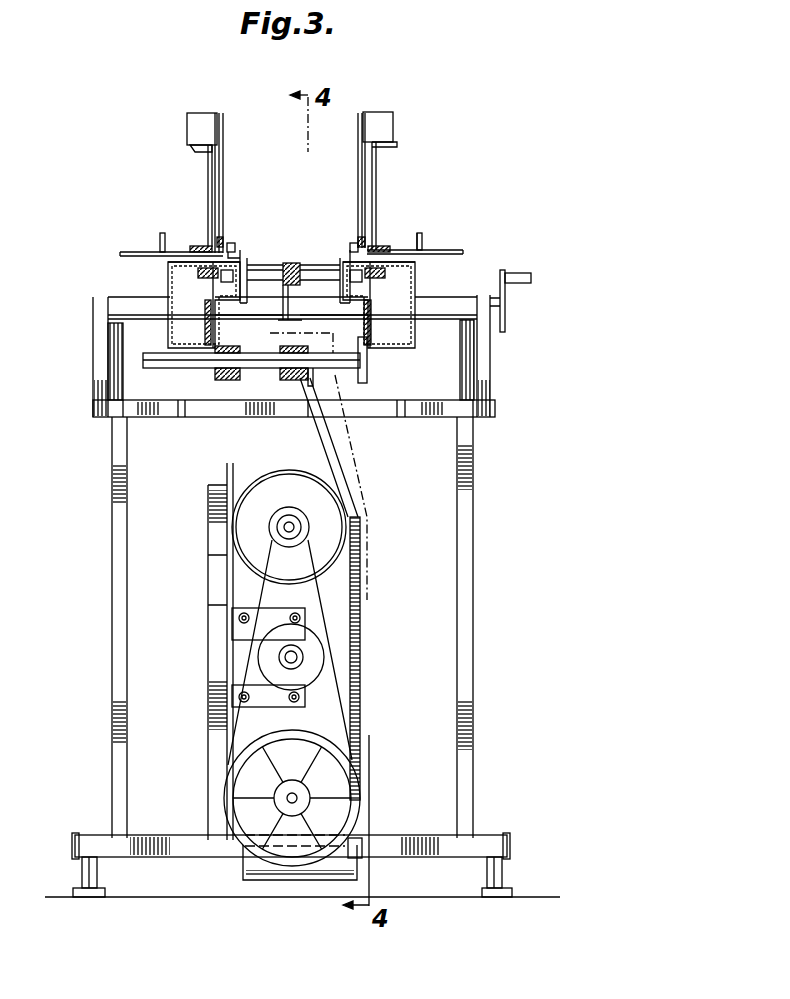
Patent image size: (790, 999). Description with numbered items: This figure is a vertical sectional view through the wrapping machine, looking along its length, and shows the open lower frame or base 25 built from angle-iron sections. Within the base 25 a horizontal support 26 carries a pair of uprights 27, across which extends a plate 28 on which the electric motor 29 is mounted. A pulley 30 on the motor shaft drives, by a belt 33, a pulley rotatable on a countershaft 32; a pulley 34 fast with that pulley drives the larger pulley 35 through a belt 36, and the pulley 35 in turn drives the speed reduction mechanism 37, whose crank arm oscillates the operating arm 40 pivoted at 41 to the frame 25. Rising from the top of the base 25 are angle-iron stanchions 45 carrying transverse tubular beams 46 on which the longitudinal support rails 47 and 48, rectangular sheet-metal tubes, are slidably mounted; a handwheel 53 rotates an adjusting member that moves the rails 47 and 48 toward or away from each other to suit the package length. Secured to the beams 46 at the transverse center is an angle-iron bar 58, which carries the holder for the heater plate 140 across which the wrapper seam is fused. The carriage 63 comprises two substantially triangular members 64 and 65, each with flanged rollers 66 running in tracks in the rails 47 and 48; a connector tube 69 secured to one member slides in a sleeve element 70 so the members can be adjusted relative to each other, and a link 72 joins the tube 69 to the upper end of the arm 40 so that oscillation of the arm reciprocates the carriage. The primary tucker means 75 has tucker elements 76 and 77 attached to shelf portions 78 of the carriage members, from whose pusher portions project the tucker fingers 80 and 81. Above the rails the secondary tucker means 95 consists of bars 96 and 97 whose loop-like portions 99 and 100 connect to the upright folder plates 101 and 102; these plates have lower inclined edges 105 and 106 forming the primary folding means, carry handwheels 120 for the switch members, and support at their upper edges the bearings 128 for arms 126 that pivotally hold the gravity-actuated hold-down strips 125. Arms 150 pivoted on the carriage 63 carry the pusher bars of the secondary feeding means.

The lower frame or base 25 is at (476, 678).
The horizontal support 26 is at (226, 836).
The uprights 27 is at (208, 657).
The plate 28 is at (226, 565).
The electric motor 29 is at (246, 509).
The pulley 30 is at (268, 527).
The countershaft 32 is at (283, 660).
The belt 33 is at (264, 600).
The pulley 34 is at (276, 645).
The larger pulley 35 is at (263, 798).
The belt 36 is at (242, 725).
The speed reduction mechanism 37 is at (262, 763).
The operating arm 40 is at (361, 675).
The pivot 41 is at (364, 838).
The angle-iron stanchions 45 is at (92, 358).
The tubular beams 46 is at (122, 298).
The longitudinal support rail 47 is at (168, 335).
The longitudinal support rail 48 is at (415, 328).
The handwheel 53 is at (506, 300).
The angle-iron bar 58 is at (282, 325).
The carriage 63 is at (377, 395).
The carriage member 64 is at (240, 316).
The carriage member 65 is at (346, 316).
The flanged rollers 66 is at (201, 333).
The connector tube 69 is at (262, 370).
The sleeve element 70 is at (228, 382).
The link 72 is at (303, 385).
The primary tucker means 75 is at (232, 240).
The primary tucker element 76 is at (248, 268).
The primary tucker element 77 is at (338, 268).
The shelf portions 78 is at (216, 300).
The tucker finger 80 is at (192, 262).
The tucker finger 81 is at (405, 262).
The secondary tucker means 95 is at (149, 244).
The bar 96 is at (197, 246).
The bar 97 is at (376, 248).
The loop-like portion 99 is at (132, 252).
The loop-like portion 100 is at (464, 252).
The upright plate 101 is at (192, 151).
The upright plate 102 is at (388, 146).
The lower inclined edge 105 is at (207, 176).
The lower inclined edge 106 is at (377, 178).
The handwheels 120 is at (423, 241).
The horizontal strips 125 is at (217, 238).
The arms 126 is at (225, 160).
The bearings 128 is at (200, 118).
The heater plate 140 is at (292, 262).
The arms 150 is at (233, 252).